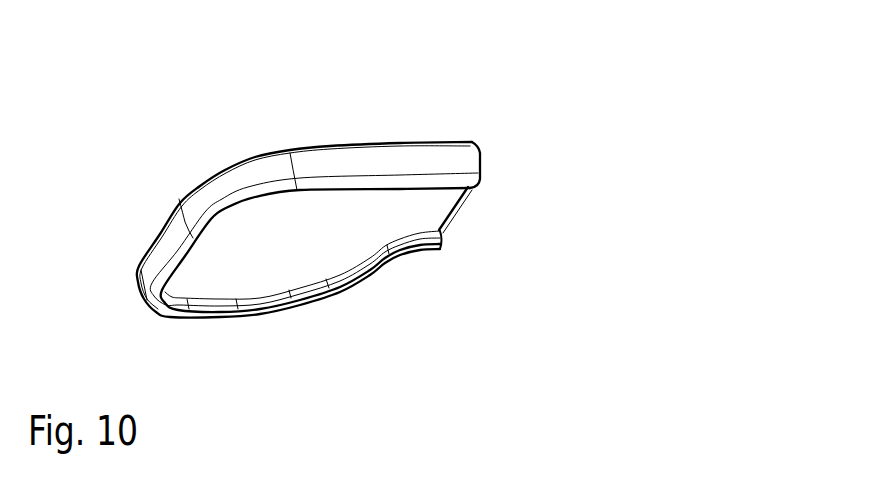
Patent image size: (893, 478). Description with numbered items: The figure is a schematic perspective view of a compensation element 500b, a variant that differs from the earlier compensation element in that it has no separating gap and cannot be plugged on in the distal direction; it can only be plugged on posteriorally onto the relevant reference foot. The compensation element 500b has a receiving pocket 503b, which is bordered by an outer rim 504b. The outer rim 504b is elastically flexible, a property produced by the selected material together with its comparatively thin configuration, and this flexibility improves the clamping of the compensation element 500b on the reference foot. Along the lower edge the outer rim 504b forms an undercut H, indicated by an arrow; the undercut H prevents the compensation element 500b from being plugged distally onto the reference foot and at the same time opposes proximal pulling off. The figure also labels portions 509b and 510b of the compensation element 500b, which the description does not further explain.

The compensation element 500b is at (455, 120).
The receiving pocket 503b is at (293, 260).
The outer rim 504b is at (385, 277).
The flange 509b is at (168, 231).
The connecting portion 510b is at (449, 217).
The undercut H is at (418, 258).